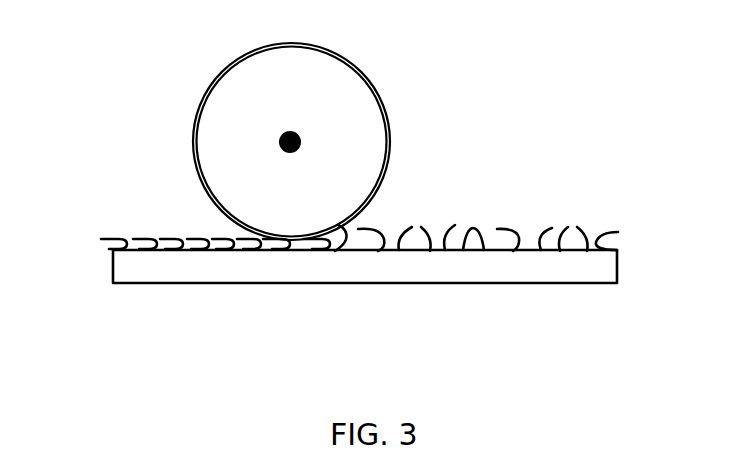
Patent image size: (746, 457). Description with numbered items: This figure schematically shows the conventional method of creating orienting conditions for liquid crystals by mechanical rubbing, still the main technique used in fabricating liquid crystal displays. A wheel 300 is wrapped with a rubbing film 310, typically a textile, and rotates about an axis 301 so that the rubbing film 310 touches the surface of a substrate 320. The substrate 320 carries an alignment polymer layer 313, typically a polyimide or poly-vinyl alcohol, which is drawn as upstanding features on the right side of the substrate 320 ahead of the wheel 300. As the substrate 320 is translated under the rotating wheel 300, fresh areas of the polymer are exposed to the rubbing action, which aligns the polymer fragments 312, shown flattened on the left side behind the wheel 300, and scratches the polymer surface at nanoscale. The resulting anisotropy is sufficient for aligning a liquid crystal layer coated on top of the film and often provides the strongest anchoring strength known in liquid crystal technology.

The wheel 300 is at (365, 130).
The rubbing film 310 is at (193, 117).
The axis 301 is at (279, 144).
The polymer fragments 312 is at (130, 237).
The alignment polymer layer 313 is at (513, 222).
The substrate 320 is at (125, 277).